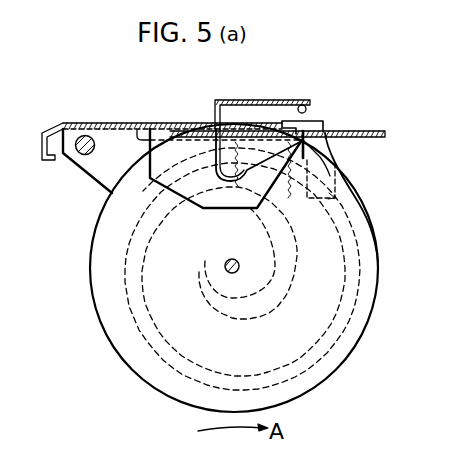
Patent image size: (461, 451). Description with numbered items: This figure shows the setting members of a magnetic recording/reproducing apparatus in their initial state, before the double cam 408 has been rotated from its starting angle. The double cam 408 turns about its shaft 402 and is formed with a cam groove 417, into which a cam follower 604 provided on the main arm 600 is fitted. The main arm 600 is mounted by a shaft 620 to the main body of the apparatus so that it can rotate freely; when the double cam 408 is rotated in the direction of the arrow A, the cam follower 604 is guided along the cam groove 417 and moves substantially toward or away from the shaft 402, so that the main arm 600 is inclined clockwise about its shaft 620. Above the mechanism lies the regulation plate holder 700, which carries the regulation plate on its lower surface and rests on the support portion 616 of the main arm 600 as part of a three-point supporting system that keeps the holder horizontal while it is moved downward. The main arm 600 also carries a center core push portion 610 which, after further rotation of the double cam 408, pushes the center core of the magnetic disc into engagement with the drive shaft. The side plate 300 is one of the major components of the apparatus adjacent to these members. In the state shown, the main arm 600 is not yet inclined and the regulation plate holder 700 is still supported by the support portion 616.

The main arm 600 is at (179, 121).
The center core push portion 610 is at (276, 99).
The side plate 300 is at (320, 118).
The regulation plate holder 700 is at (380, 130).
The support portion 616 is at (333, 156).
The cam follower 604 is at (337, 181).
The shaft 620 is at (82, 156).
The shaft 402 is at (228, 262).
The double cam 408 is at (375, 307).
The cam groove 417 is at (322, 362).